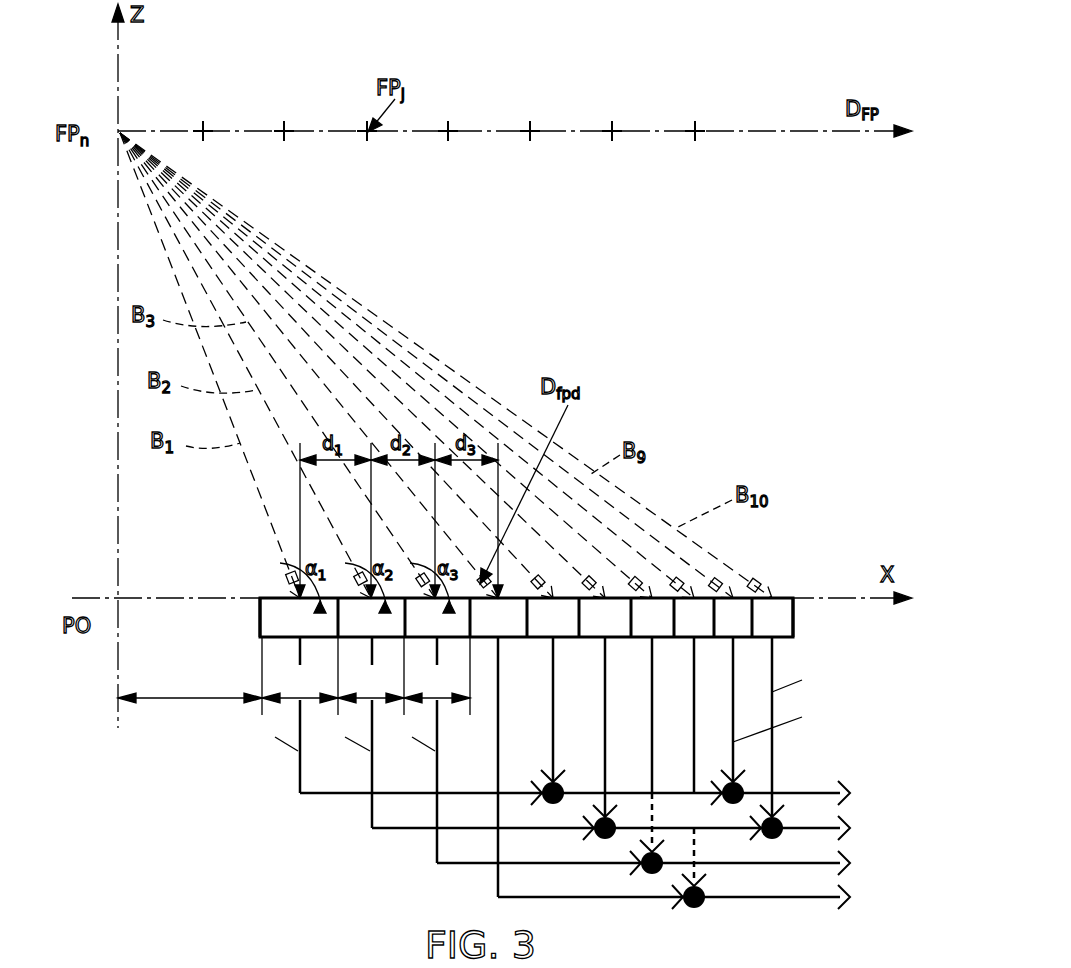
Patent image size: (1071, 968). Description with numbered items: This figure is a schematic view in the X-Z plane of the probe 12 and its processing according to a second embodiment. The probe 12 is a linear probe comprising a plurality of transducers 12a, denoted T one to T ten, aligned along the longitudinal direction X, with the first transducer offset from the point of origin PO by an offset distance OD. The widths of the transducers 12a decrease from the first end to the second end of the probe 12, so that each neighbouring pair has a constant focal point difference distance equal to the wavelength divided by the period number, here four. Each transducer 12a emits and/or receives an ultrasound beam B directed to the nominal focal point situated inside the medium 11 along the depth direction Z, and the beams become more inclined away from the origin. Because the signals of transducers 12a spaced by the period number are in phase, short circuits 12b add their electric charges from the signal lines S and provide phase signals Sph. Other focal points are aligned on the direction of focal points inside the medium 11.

The medium 11 is at (544, 256).
The probe 12 is at (668, 478).
The transducer 12a is at (280, 597).
The short circuit 12b is at (598, 838).